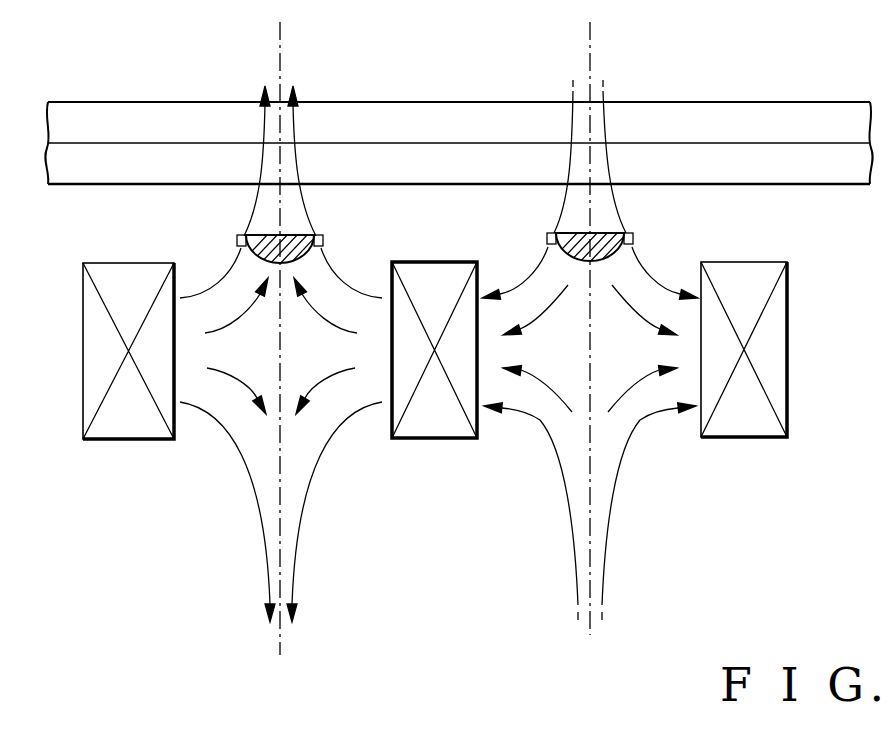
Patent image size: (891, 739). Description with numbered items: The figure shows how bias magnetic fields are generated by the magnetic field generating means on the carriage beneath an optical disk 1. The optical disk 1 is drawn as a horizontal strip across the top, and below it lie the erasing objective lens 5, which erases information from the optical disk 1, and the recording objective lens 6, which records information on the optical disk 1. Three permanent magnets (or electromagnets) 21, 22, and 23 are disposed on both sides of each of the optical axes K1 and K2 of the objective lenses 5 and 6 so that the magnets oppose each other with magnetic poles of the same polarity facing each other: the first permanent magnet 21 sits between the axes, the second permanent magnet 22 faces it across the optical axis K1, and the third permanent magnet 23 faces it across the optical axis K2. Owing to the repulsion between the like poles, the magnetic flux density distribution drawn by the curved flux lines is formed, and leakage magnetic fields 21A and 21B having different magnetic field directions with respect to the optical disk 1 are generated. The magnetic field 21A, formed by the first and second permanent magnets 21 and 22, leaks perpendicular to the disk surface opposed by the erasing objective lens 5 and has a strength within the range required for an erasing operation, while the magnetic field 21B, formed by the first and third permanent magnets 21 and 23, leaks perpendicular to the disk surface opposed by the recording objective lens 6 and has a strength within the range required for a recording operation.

The optical disk 1 is at (131, 130).
The erasing objective lens 5 is at (613, 228).
The recording objective lens 6 is at (300, 230).
The first permanent magnet 21 is at (437, 430).
The second permanent magnet 22 is at (745, 430).
The third permanent magnet 23 is at (128, 430).
The leakage magnetic field 21A is at (604, 125).
The leakage magnetic field 21B is at (296, 128).
The optical axis K1 is at (590, 57).
The optical axis K2 is at (280, 57).